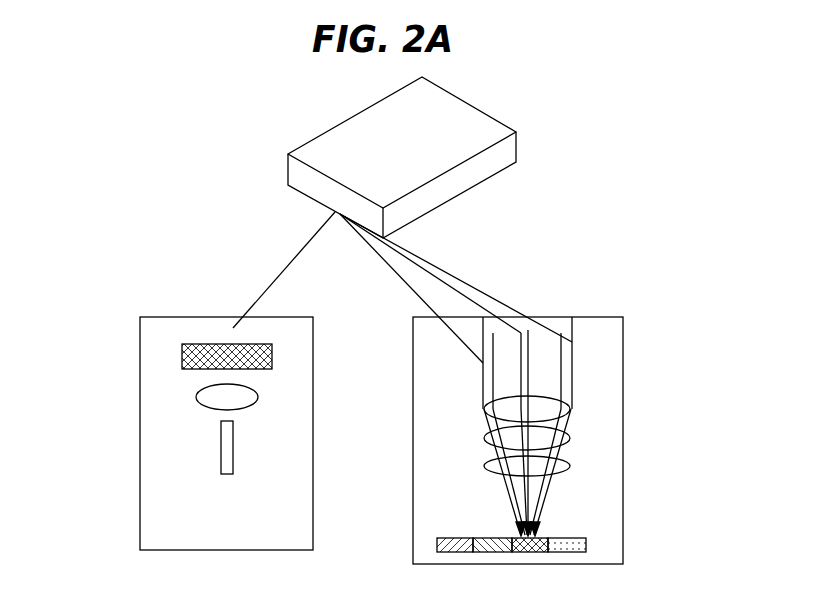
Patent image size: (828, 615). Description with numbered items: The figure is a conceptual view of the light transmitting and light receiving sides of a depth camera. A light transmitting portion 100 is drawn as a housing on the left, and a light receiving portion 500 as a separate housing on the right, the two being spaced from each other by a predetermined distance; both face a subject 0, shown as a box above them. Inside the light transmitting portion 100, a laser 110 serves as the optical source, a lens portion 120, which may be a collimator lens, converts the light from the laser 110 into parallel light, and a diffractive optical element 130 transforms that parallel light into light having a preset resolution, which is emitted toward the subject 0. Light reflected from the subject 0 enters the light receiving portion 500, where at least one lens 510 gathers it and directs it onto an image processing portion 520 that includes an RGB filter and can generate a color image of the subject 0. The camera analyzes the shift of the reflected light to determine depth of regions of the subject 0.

The subject 0 is at (277, 166).
The light transmitting portion 100 is at (131, 519).
The laser 110 is at (226, 439).
The lens portion 120 is at (198, 395).
The diffractive optical element 130 is at (182, 355).
The light receiving portion 500 is at (631, 503).
The lens 510 is at (576, 407).
The image processing portion 520 is at (586, 545).